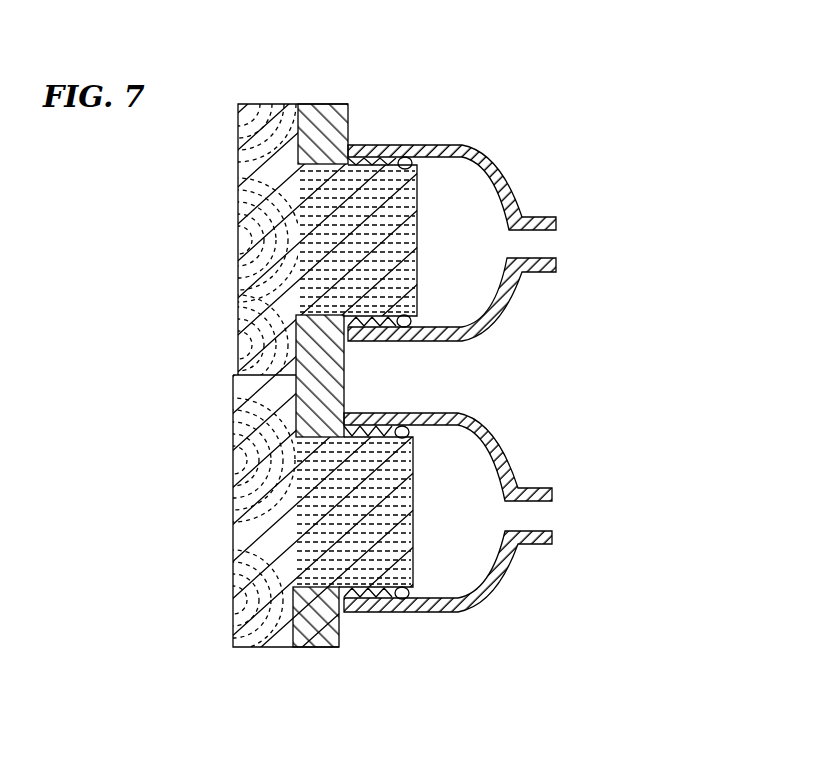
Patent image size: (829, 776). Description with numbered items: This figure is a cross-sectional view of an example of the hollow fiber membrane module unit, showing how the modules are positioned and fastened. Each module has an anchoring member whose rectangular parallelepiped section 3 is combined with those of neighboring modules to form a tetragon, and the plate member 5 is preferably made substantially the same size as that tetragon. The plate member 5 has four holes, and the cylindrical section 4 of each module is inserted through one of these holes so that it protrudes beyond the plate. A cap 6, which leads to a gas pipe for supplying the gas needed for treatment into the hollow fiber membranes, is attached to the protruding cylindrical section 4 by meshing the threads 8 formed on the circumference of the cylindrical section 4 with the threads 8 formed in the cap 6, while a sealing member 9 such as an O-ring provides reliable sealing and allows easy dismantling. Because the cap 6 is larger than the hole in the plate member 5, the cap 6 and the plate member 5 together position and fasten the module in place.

The rectangular parallelepiped section 3 is at (265, 110).
The cylindrical section 4 is at (417, 241).
The plate member 5 is at (325, 112).
The cap 6 is at (540, 258).
The threads 8 is at (373, 165).
The sealing member 9 is at (410, 162).